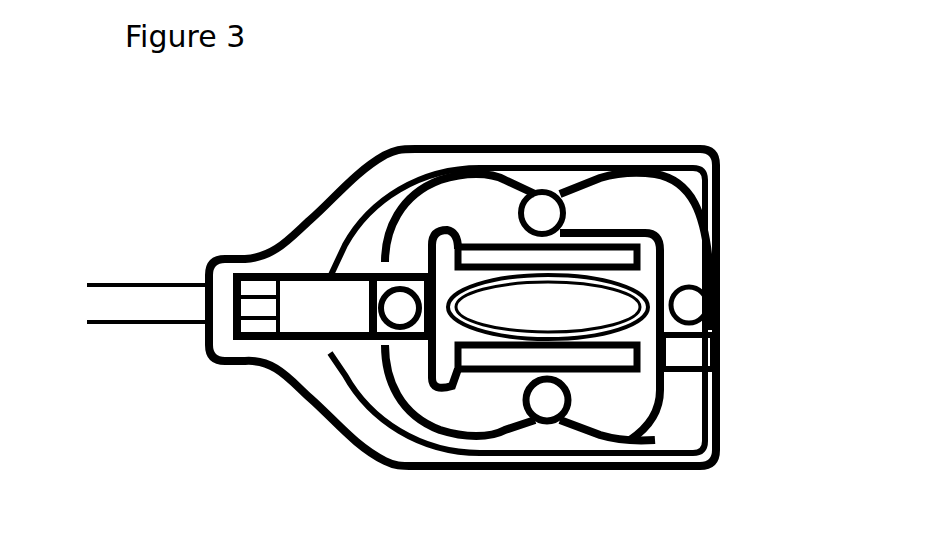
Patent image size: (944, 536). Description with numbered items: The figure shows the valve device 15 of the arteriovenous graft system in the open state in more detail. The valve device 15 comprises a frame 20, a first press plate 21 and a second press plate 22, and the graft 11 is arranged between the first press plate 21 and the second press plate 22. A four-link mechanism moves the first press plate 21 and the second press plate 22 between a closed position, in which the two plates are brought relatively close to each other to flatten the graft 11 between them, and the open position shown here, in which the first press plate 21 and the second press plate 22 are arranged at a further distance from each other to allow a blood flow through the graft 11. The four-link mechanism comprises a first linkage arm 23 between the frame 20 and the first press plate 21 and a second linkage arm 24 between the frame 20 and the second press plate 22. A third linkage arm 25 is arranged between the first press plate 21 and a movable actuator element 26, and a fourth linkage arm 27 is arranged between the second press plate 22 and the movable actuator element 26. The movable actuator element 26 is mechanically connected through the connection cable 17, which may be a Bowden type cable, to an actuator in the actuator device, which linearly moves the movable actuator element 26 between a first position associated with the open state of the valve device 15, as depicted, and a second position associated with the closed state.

The graft 11 is at (467, 290).
The valve device 15 is at (320, 385).
The connection cable 17 is at (145, 308).
The frame 20 is at (690, 388).
The first press plate 21 is at (588, 257).
The second press plate 22 is at (577, 357).
The first linkage arm 23 is at (678, 222).
The second linkage arm 24 is at (645, 405).
The third linkage arm 25 is at (432, 212).
The movable actuator element 26 is at (310, 307).
The fourth linkage arm 27 is at (420, 395).